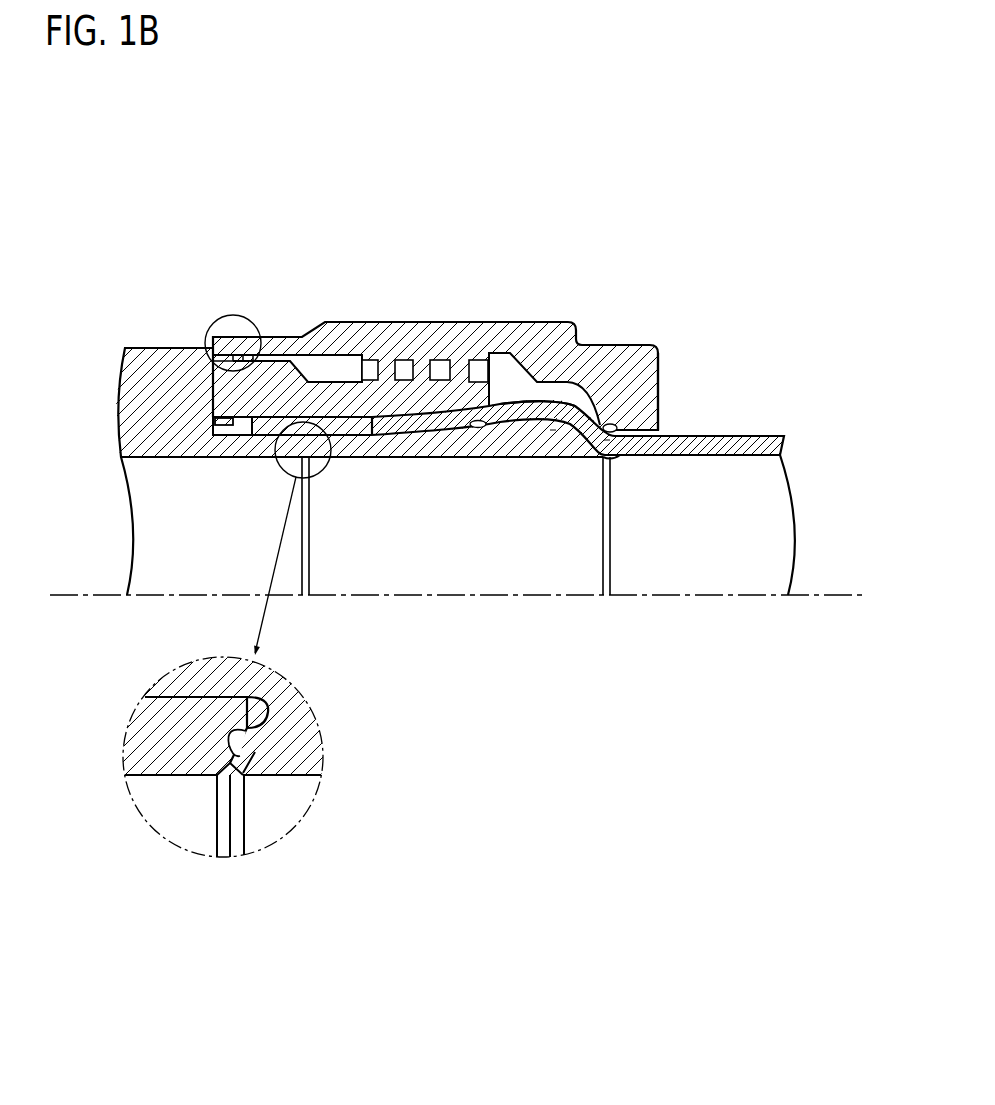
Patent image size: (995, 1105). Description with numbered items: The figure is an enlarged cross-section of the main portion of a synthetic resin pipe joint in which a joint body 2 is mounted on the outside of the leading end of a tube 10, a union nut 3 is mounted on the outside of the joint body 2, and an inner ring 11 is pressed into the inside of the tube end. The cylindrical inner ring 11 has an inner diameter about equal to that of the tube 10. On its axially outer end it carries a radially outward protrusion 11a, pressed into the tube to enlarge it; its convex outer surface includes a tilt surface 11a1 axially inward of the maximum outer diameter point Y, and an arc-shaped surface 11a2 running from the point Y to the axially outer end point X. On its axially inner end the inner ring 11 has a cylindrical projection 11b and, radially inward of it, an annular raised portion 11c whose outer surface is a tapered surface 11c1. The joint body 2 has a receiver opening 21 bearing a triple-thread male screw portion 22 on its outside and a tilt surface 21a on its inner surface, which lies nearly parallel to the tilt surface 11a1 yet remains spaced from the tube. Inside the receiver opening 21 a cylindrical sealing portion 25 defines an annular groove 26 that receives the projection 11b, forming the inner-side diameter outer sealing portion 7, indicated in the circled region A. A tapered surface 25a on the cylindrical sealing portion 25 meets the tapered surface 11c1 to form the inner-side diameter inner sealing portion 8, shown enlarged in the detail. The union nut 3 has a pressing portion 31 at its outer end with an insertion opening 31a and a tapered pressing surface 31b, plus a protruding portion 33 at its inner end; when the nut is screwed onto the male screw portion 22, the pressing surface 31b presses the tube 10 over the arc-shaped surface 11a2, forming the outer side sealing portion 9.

The joint body 2 is at (153, 348).
The union nut 3 is at (535, 320).
The inner-side diameter outer sealing portion 7 is at (224, 423).
The inner-side diameter inner sealing portion 8 is at (280, 707).
The outer side sealing portion 9 is at (633, 440).
The tube 10 is at (752, 437).
The inner ring 11 is at (350, 447).
The protrusion 11a is at (572, 428).
The tilt surface 11a1 is at (470, 433).
The arc-shaped surface 11a2 is at (593, 423).
The projection 11b is at (252, 440).
The raised portion 11c is at (258, 758).
The tapered surface 11c1 is at (253, 730).
The receiver opening 21 is at (340, 390).
The tilt surface 21a is at (490, 403).
The male screw portion 22 is at (418, 360).
The cylindrical sealing portion 25 is at (233, 457).
The tapered surface 25a is at (253, 760).
The annular groove 26 is at (235, 452).
The pressing portion 31 is at (660, 373).
The insertion opening 31a is at (657, 447).
The pressing surface 31b is at (630, 433).
The protruding portion 33 is at (273, 343).
The enlarged portion A is at (227, 315).
The axially outer end point X is at (607, 440).
The maximum outer diameter point Y is at (553, 430).